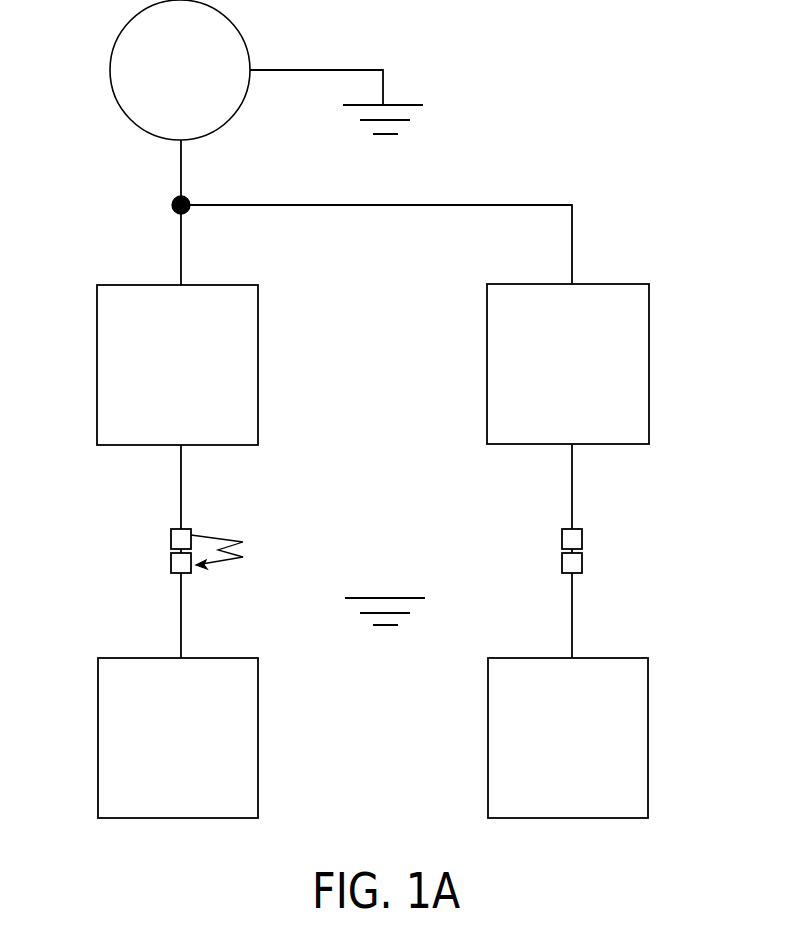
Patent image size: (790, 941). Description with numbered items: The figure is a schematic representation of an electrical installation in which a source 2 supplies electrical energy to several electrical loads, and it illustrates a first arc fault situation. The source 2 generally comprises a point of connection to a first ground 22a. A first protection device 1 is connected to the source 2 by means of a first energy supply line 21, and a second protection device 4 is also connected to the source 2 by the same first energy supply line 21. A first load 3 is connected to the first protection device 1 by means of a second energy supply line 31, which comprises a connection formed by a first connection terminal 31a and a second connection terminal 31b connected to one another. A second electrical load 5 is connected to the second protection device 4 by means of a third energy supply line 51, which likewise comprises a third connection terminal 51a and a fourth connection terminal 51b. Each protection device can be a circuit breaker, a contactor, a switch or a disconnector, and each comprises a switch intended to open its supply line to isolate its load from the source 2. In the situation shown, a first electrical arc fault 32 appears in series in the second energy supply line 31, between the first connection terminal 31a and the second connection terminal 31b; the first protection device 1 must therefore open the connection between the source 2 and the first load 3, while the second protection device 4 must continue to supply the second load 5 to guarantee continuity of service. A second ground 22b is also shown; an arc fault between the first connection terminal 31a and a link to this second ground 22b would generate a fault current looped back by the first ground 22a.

The first protection device 1 is at (97, 365).
The source 2 is at (110, 58).
The first load 3 is at (98, 748).
The second protection device 4 is at (649, 363).
The second electrical load 5 is at (648, 748).
The first energy supply line 21 is at (181, 173).
The first ground 22a is at (314, 69).
The second ground 22b is at (390, 612).
The second energy supply line 31 is at (181, 498).
The first connection terminal 31a is at (171, 538).
The second connection terminal 31b is at (171, 563).
The first electrical arc fault 32 is at (232, 540).
The third energy supply line 51 is at (573, 480).
The third connection terminal 51a is at (582, 538).
The fourth connection terminal 51b is at (582, 563).